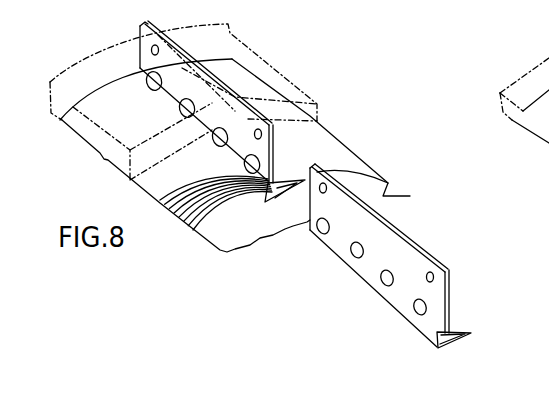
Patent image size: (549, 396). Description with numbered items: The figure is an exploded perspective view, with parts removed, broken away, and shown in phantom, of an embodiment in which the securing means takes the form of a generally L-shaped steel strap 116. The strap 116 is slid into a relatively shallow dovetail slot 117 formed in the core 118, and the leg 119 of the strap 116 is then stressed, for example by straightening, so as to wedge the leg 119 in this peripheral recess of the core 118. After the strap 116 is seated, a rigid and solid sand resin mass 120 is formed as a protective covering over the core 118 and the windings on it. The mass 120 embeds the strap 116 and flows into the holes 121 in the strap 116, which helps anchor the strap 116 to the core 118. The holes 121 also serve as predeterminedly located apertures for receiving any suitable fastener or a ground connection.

The steel strap 116 is at (449, 302).
The dovetail slot 117 is at (270, 198).
The core 118 is at (355, 153).
The leg 119 is at (468, 337).
The sand resin mass 120 is at (231, 33).
The holes 121 is at (148, 88).